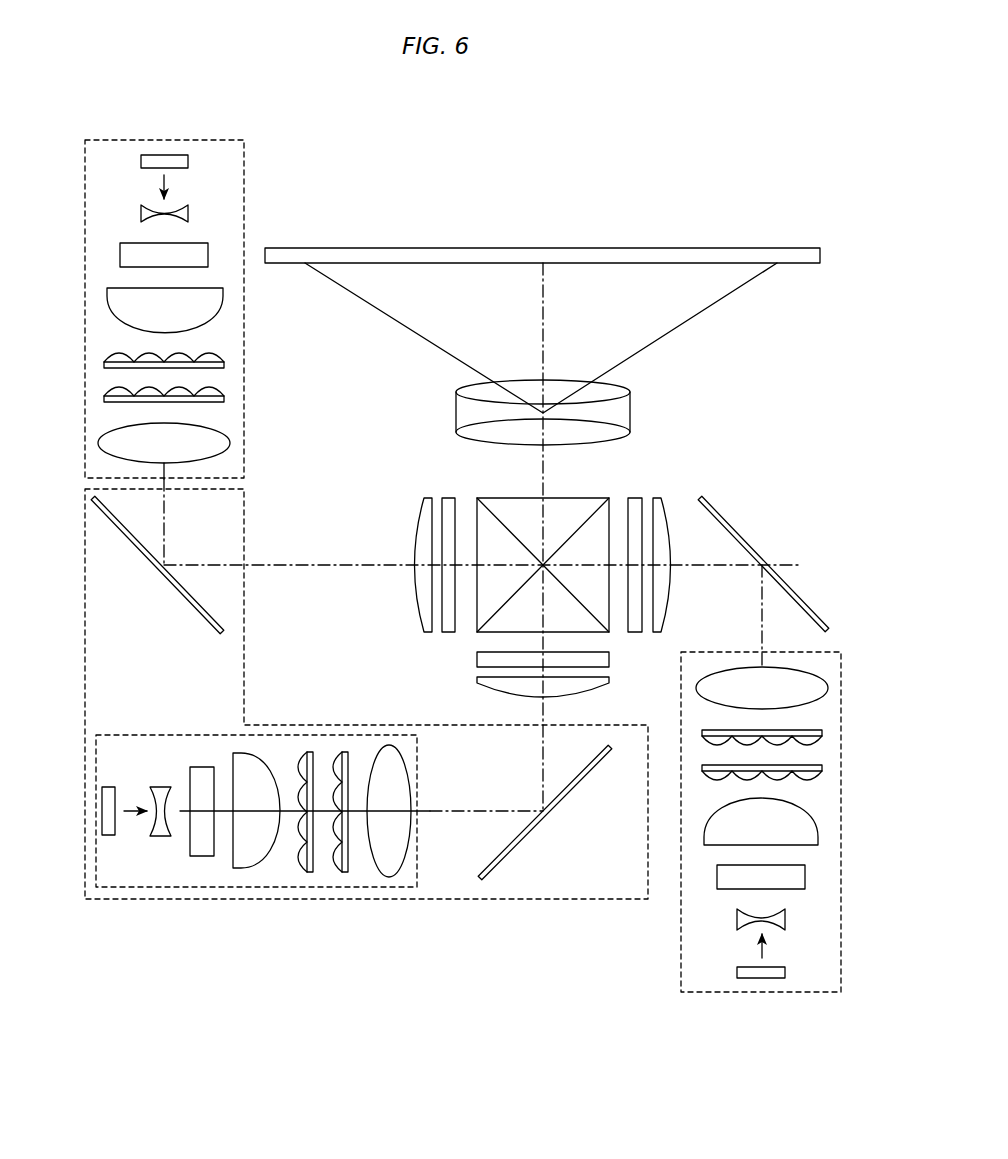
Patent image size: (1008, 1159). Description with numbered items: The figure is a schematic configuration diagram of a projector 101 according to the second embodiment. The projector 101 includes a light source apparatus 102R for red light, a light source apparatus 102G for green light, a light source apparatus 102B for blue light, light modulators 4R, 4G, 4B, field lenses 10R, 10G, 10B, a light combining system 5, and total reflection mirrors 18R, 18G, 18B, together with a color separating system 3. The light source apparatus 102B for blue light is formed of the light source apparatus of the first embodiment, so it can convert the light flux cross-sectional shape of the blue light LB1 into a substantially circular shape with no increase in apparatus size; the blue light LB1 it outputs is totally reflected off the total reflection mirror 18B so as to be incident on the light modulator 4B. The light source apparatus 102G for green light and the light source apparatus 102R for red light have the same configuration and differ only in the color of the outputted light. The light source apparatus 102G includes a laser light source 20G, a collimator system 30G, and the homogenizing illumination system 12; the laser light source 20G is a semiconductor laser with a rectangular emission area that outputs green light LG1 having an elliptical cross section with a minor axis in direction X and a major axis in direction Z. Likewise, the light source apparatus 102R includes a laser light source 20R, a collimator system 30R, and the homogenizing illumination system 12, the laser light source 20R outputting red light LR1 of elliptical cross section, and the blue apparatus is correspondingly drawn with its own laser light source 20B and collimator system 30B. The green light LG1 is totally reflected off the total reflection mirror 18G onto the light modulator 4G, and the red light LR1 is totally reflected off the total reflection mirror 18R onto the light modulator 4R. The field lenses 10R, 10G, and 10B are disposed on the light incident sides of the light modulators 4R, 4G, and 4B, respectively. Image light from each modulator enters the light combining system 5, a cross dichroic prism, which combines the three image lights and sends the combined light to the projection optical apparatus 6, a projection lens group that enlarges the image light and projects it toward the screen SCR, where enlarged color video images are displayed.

The projector 101 is at (826, 240).
The screen SCR is at (797, 265).
The projection optical apparatus 6 is at (525, 388).
The light combining system 5 is at (555, 505).
The light modulator 4R is at (450, 495).
The light modulator 4G is at (482, 659).
The light modulator 4B is at (638, 495).
The field lens 10R is at (428, 498).
The field lens 10G is at (480, 678).
The field lens 10B is at (658, 498).
The total reflection mirror 18R is at (119, 533).
The total reflection mirror 18G is at (520, 845).
The total reflection mirror 18B is at (727, 518).
The light source apparatus for red light 102R is at (244, 207).
The light source apparatus for green light 102G is at (185, 735).
The light source apparatus for blue light 102B is at (842, 660).
The laser light source 20R is at (197, 160).
The laser light source 20G is at (110, 861).
The blue light source 20B is at (729, 970).
The collimator system 30R is at (82, 205).
The collimator system 30G is at (285, 907).
The blue light beam shaping optical system 30B is at (843, 793).
The homogenizing illumination system 12 is at (82, 353).
The color separating system 3 is at (83, 857).
The red light LR1 is at (176, 186).
The green light LG1 is at (124, 811).
The blue light LB1 is at (722, 570).